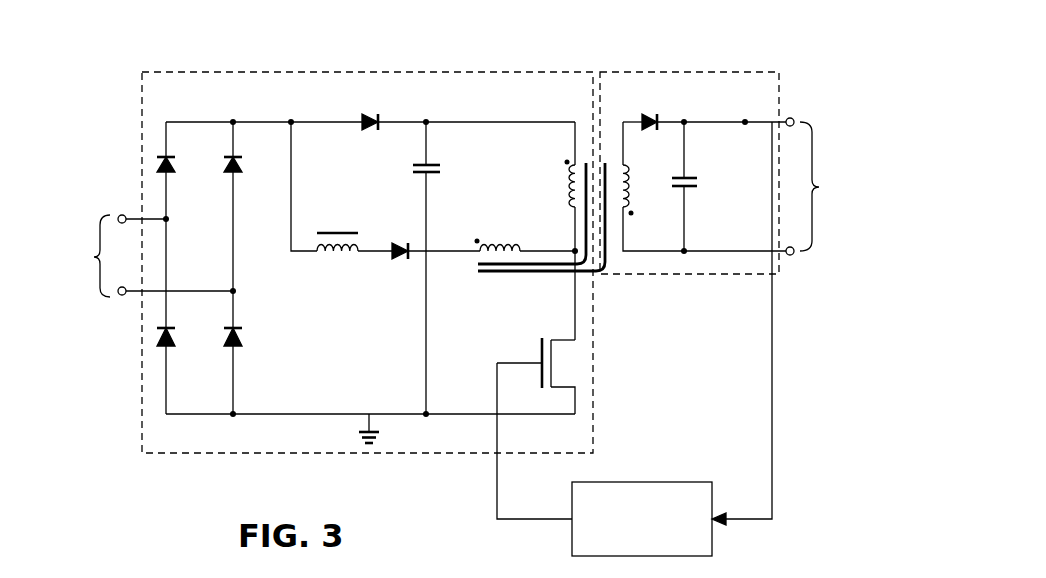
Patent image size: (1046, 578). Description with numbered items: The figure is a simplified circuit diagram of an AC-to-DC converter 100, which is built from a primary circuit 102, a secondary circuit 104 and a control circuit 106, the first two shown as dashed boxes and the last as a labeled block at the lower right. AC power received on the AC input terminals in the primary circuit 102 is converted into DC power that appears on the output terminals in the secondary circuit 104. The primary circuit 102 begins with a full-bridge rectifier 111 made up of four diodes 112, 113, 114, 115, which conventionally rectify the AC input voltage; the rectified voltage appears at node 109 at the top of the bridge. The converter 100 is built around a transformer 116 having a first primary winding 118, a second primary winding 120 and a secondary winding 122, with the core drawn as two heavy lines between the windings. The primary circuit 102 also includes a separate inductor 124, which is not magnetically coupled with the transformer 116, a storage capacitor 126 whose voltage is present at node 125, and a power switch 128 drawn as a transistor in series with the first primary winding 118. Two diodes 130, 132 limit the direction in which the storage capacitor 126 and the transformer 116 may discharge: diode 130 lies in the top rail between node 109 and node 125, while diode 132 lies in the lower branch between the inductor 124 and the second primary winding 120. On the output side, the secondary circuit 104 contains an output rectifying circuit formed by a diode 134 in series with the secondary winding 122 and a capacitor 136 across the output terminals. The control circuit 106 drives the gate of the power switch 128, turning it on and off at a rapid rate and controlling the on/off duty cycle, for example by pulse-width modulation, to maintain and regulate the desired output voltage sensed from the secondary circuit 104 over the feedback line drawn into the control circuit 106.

The AC-to-DC converter 100 is at (476, 58).
The primary circuit 102 is at (338, 72).
The secondary circuit 104 is at (712, 71).
The control circuit 106 is at (677, 481).
The node 109 is at (291, 119).
The full-bridge rectifier 111 is at (209, 97).
The diode 112 is at (174, 169).
The diode 113 is at (240, 169).
The diode 114 is at (240, 344).
The diode 115 is at (172, 344).
The transformer 116 is at (609, 140).
The first primary winding 118 is at (578, 163).
The second primary winding 120 is at (504, 240).
The secondary winding 122 is at (636, 196).
The inductor 124 is at (345, 258).
The node 125 is at (425, 119).
The storage capacitor 126 is at (440, 165).
The power switch 128 is at (539, 356).
The diode 130 is at (366, 131).
The diode 132 is at (398, 262).
The diode 134 is at (650, 114).
The capacitor 136 is at (694, 189).